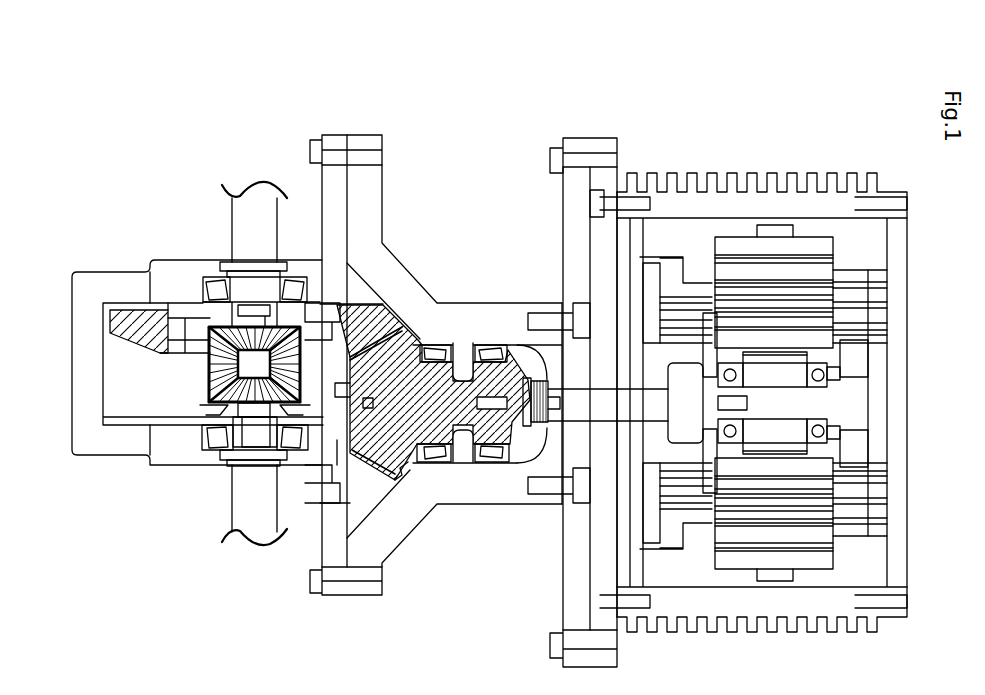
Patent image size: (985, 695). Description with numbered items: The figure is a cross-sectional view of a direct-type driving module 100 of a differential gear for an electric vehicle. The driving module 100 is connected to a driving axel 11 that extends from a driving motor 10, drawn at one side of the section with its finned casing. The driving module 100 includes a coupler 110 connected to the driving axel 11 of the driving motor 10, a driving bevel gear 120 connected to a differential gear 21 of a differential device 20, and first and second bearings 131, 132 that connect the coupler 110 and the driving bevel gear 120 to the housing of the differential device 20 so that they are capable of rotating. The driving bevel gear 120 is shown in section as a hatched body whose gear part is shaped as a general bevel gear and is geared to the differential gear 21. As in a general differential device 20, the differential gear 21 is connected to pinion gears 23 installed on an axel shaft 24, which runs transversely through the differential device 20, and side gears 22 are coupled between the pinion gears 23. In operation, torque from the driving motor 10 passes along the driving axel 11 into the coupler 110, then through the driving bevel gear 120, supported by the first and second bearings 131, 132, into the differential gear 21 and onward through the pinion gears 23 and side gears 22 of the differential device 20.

The driving motor 10 is at (769, 262).
The driving axel 11 is at (573, 392).
The differential device 20 is at (135, 380).
The differential gear 21 is at (389, 315).
The side gears 22 is at (211, 369).
The pinion gears 23 is at (236, 394).
The axel shaft 24 is at (239, 227).
The driving module 100 is at (467, 477).
The coupler 110 is at (517, 445).
The driving bevel gear 120 is at (397, 472).
The first bearing 131 is at (489, 344).
The second bearing 132 is at (440, 350).